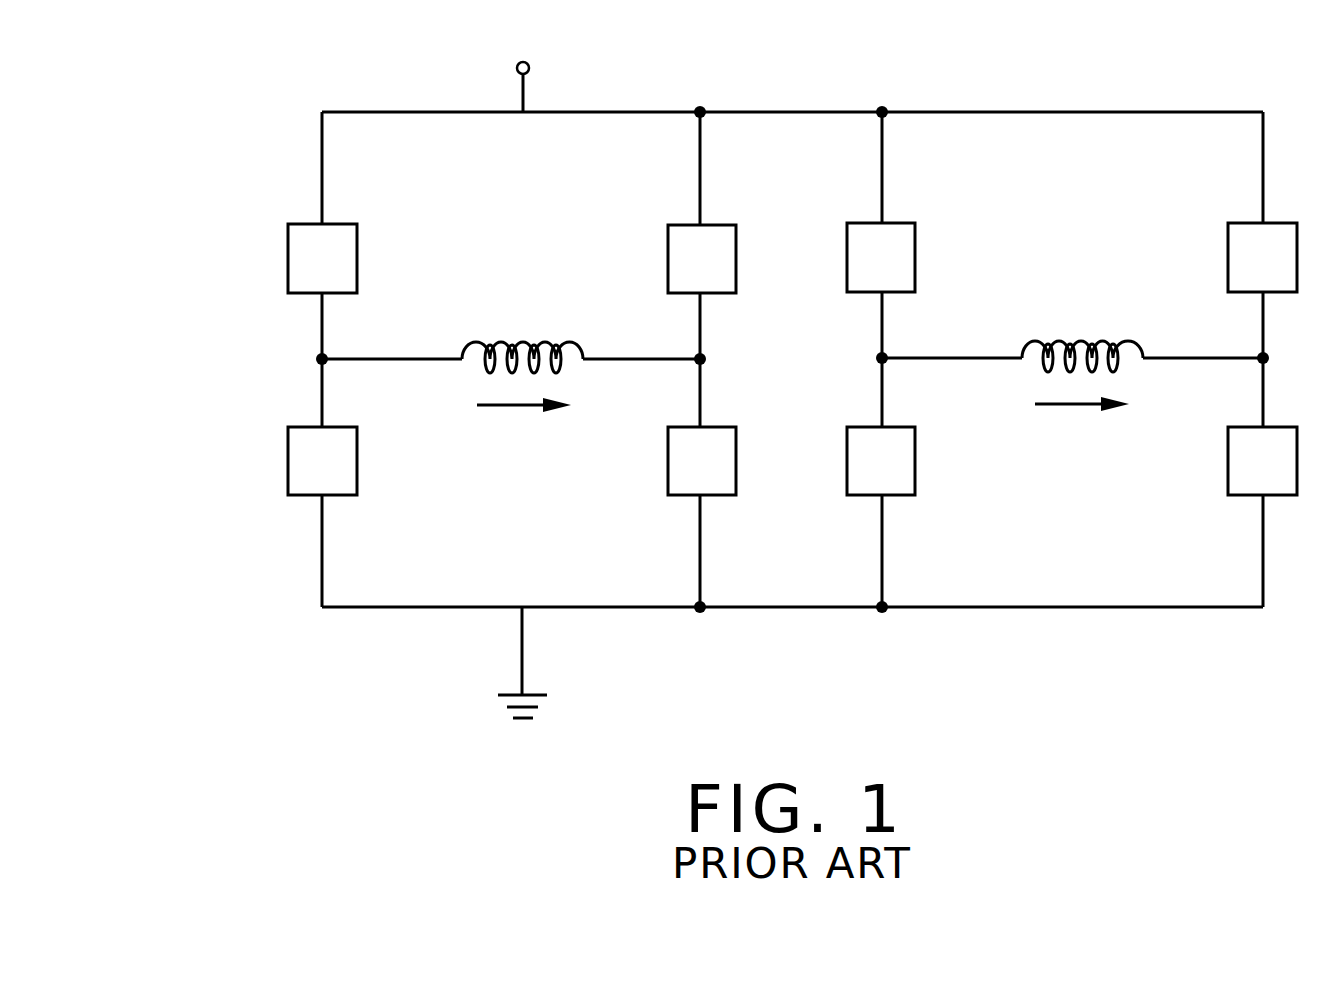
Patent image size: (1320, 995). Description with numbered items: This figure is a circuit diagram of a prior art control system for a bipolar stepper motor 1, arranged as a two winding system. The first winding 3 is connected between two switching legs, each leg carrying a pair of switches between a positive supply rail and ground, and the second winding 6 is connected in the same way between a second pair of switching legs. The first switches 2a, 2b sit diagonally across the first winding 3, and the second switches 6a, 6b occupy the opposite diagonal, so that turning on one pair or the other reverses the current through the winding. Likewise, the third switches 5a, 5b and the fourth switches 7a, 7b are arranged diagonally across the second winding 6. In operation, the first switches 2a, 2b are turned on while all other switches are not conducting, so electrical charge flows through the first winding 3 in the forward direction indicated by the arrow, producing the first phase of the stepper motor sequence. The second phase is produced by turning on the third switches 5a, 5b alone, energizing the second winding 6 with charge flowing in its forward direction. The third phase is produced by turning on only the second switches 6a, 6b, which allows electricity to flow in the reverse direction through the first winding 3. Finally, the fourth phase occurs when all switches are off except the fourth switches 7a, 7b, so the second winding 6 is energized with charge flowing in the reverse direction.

The bipolar stepper motor 1 is at (258, 332).
The first switch 2a is at (288, 248).
The first switch 2b is at (736, 465).
The first winding 3 is at (567, 342).
The third switch 5a is at (915, 233).
The third switch 5b is at (1228, 465).
The second winding 6 is at (1035, 340).
The second switch 6a is at (288, 460).
The second switch 6b is at (668, 262).
The fourth switch 7a is at (915, 465).
The fourth switch 7b is at (1228, 240).